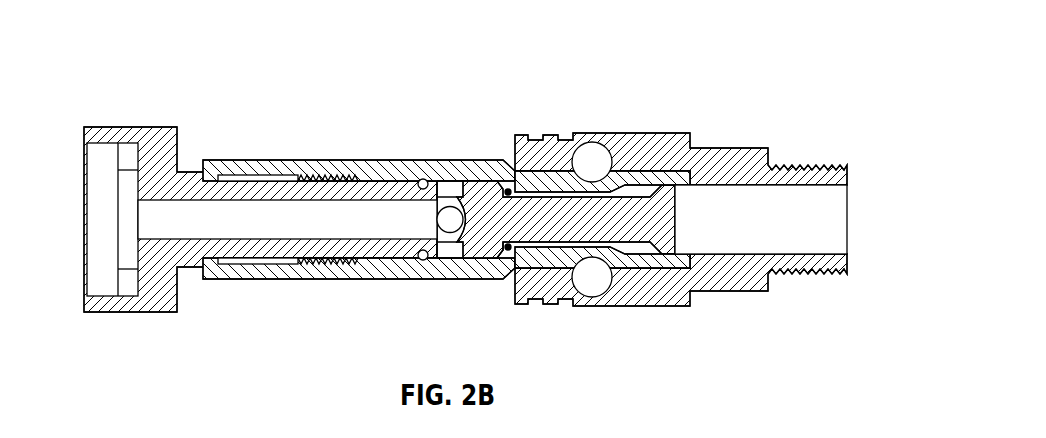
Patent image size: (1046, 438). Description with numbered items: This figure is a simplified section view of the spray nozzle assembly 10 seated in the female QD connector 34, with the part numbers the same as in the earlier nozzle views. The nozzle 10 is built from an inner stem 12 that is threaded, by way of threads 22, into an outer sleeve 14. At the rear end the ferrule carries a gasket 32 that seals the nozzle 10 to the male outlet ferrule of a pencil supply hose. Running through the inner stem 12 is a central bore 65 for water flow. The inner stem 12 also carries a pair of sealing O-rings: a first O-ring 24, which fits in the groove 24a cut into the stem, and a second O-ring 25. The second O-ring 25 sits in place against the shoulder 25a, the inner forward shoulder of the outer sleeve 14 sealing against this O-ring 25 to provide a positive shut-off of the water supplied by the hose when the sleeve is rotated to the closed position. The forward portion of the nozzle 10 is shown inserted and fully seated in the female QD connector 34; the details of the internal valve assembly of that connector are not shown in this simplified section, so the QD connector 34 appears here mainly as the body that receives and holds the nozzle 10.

The spray nozzle assembly 10 is at (465, 206).
The inner stem 12 is at (187, 270).
The outer sleeve 14 is at (338, 168).
The threads 22 is at (322, 262).
The first O-ring 24 is at (423, 179).
The groove 24a is at (413, 262).
The second O-ring 25 is at (505, 180).
The shoulder 25a is at (492, 265).
The gasket 32 is at (128, 152).
The female QD connector 34 is at (620, 125).
The central bore 65 is at (281, 232).